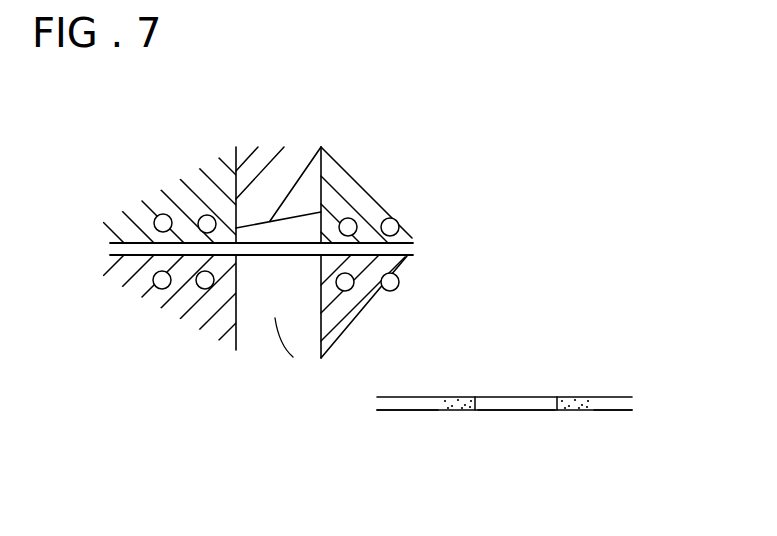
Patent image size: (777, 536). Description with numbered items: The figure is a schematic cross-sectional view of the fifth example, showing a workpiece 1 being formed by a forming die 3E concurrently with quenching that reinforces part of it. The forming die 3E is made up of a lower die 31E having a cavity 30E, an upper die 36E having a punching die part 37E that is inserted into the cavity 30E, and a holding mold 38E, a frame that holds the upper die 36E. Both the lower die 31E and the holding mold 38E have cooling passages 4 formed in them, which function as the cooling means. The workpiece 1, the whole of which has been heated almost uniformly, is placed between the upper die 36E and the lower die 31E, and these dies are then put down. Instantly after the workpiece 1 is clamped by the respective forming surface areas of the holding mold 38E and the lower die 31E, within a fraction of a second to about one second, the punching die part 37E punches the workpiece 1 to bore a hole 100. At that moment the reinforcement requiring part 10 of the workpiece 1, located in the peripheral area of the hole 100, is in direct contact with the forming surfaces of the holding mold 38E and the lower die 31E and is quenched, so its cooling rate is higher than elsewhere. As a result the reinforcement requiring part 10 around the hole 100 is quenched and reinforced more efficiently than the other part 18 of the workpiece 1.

The workpiece 1 is at (264, 262).
The forming die 3E is at (416, 178).
The cooling passage 4 is at (161, 214).
The reinforcement requiring part 10 is at (568, 398).
The other part 18 is at (410, 403).
The cavity 30E is at (352, 403).
The lower die 31E is at (353, 313).
The upper die 36E is at (410, 218).
The punching die part 37E is at (278, 163).
The holding mold 38E is at (137, 213).
The hole 100 is at (523, 403).